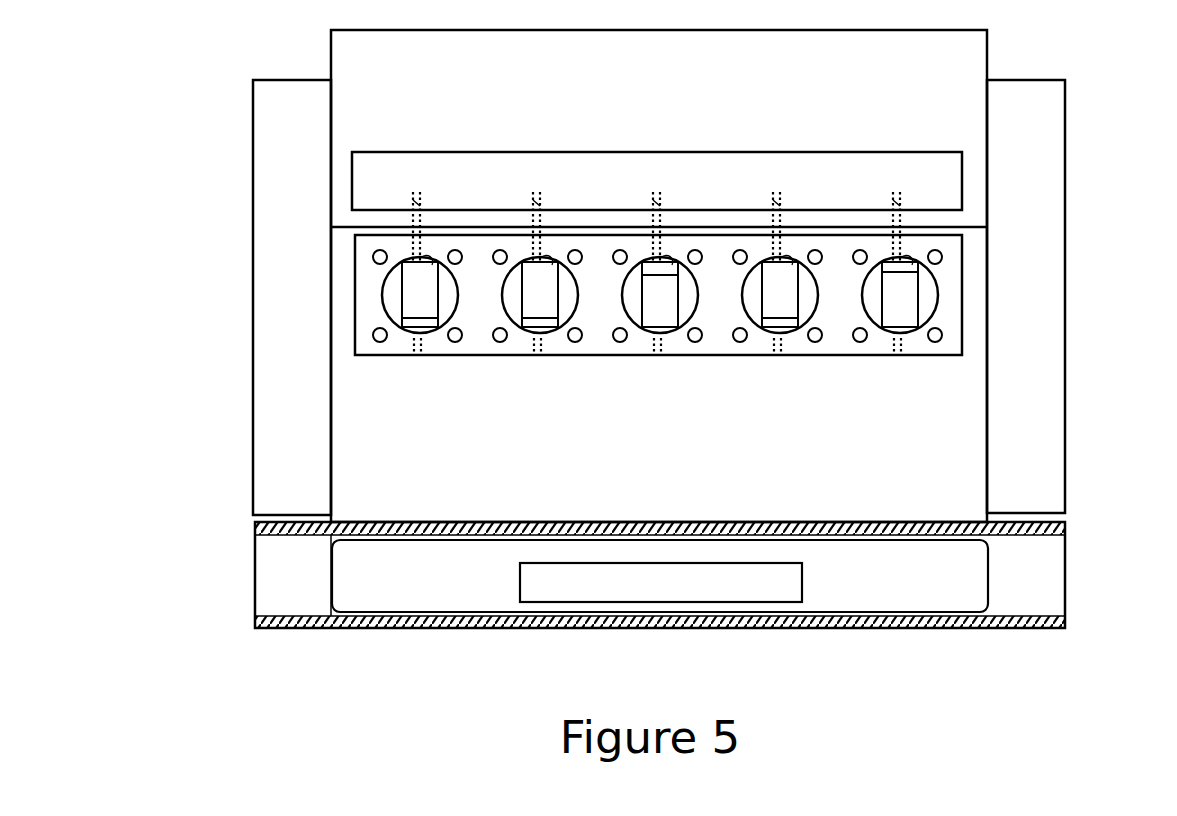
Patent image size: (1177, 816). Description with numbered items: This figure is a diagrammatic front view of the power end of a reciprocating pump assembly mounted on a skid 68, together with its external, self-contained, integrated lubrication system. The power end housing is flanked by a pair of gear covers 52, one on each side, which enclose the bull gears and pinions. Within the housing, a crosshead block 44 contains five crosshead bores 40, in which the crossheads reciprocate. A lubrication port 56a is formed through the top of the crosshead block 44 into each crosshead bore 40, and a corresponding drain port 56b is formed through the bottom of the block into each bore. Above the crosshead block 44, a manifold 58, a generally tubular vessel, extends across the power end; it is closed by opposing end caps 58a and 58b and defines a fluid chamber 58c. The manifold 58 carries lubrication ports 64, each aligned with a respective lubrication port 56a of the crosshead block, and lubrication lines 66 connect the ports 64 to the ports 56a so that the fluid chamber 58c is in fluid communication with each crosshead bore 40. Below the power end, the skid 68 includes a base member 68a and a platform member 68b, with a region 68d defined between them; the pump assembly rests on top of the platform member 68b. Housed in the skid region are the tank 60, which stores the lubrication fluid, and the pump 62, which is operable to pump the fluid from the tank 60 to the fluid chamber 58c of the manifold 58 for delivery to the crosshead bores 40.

The crosshead bore 40 is at (458, 295).
The crosshead block 44 is at (355, 253).
The gear cover 52 is at (253, 148).
The lubrication port 56a is at (437, 263).
The drain port 56b is at (425, 341).
The manifold 58 is at (685, 164).
The end cap 58a is at (349, 170).
The end cap 58b is at (966, 172).
The fluid chamber 58c is at (505, 175).
The tank 60 is at (660, 576).
The pump 62 is at (661, 582).
The lubrication port 64 is at (410, 194).
The lubrication line 66 is at (418, 221).
The skid 68 is at (663, 603).
The base member 68a is at (1040, 628).
The platform member 68b is at (285, 538).
The region 68d is at (312, 602).